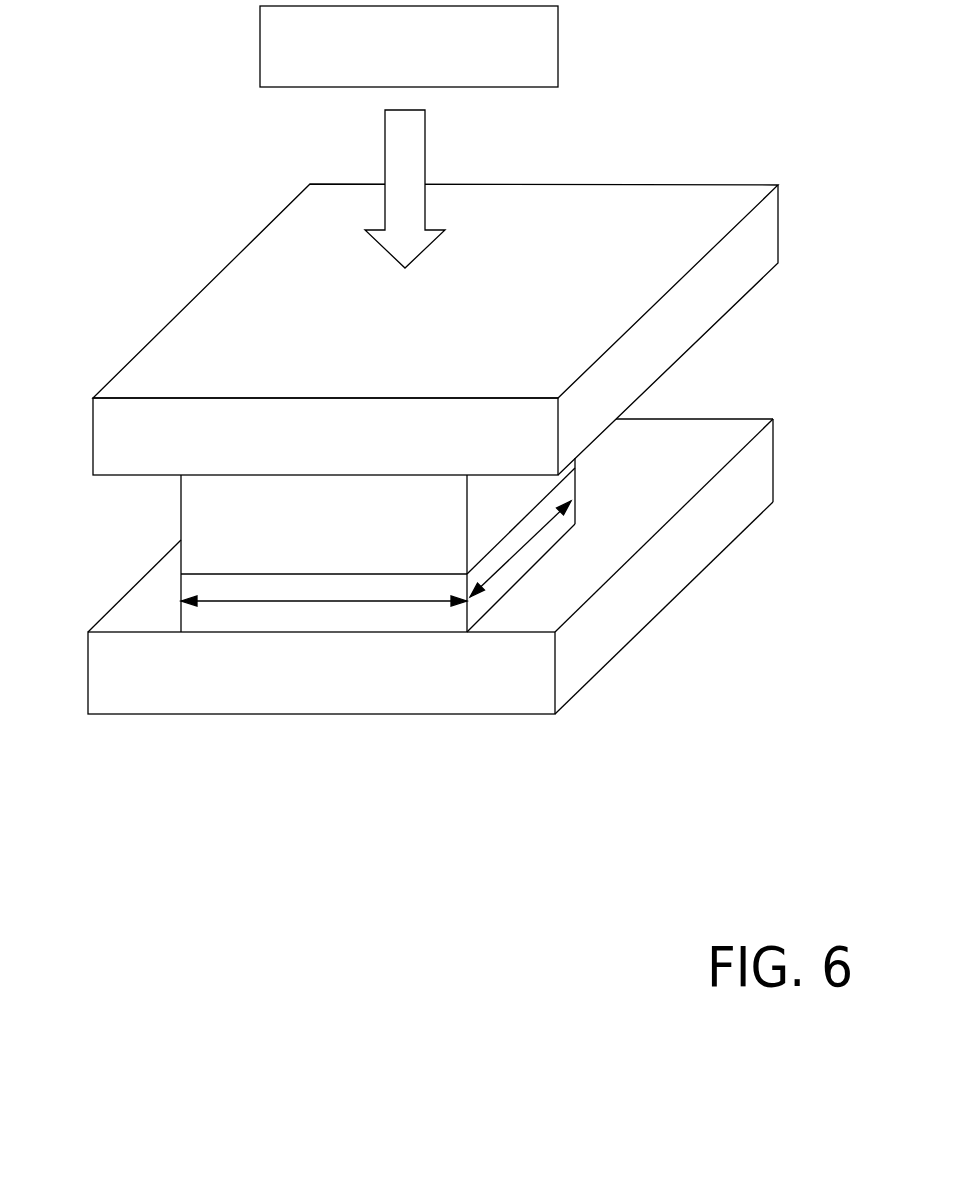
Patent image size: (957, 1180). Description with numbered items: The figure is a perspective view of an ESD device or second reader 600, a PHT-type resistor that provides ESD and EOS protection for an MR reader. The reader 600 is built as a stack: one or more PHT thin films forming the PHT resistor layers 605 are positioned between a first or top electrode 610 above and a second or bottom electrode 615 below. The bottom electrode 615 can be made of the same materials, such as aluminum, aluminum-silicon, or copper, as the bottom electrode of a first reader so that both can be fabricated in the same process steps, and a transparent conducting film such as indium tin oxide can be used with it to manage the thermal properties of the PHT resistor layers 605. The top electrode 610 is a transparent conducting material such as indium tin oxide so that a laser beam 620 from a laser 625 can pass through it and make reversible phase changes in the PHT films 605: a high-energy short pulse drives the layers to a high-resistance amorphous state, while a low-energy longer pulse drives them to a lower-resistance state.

The second reader 600 is at (125, 85).
The PHT resistor layers 605 is at (143, 527).
The top electrode 610 is at (92, 445).
The bottom electrode 615 is at (87, 692).
The laser beam 620 is at (427, 163).
The laser 625 is at (558, 50).